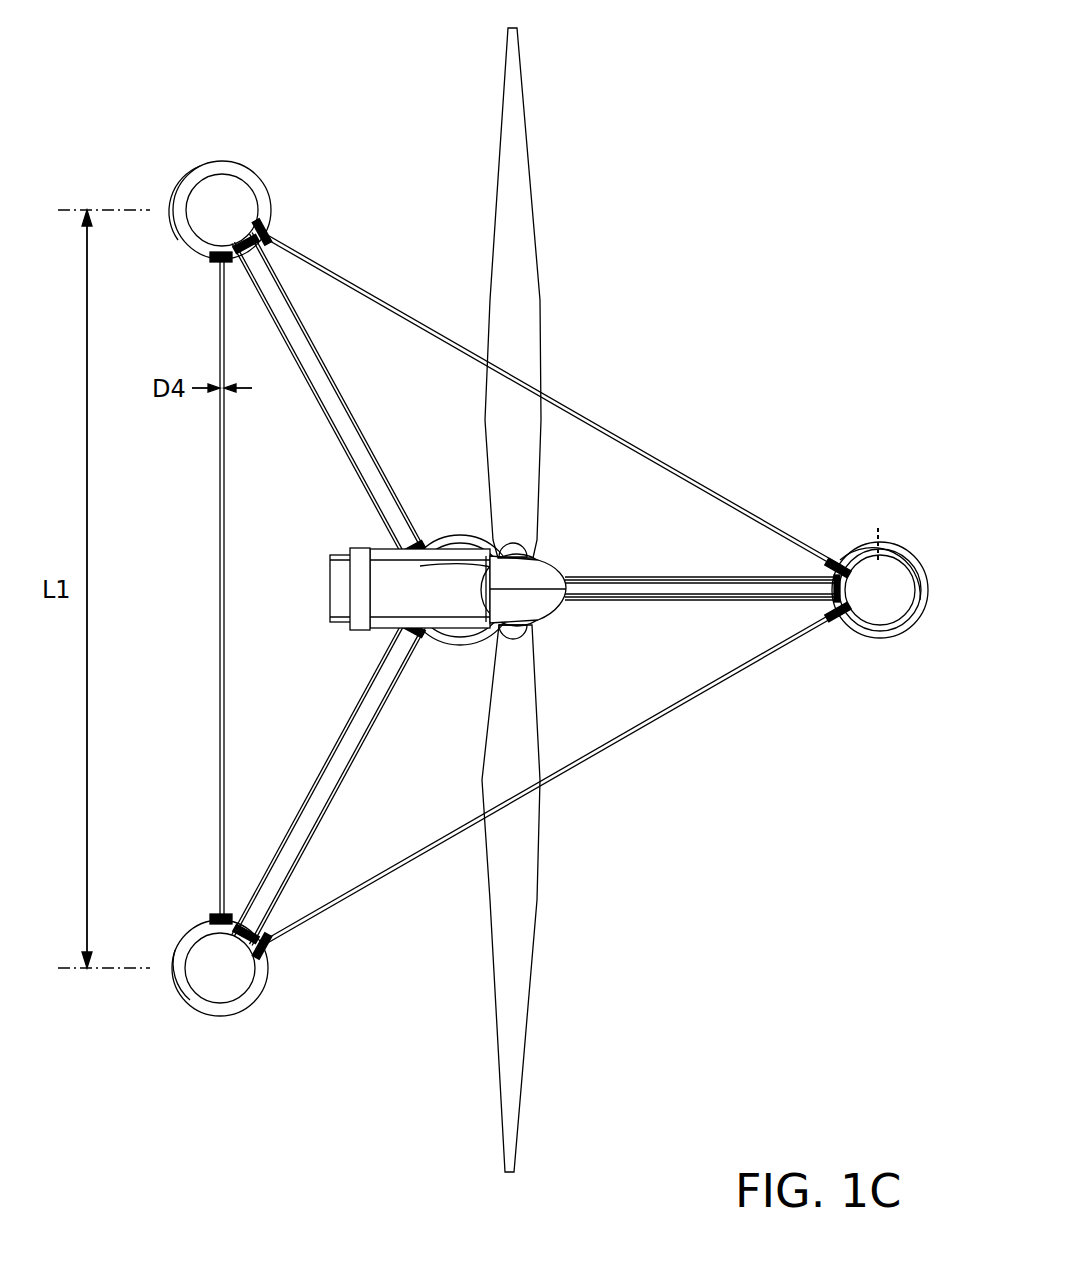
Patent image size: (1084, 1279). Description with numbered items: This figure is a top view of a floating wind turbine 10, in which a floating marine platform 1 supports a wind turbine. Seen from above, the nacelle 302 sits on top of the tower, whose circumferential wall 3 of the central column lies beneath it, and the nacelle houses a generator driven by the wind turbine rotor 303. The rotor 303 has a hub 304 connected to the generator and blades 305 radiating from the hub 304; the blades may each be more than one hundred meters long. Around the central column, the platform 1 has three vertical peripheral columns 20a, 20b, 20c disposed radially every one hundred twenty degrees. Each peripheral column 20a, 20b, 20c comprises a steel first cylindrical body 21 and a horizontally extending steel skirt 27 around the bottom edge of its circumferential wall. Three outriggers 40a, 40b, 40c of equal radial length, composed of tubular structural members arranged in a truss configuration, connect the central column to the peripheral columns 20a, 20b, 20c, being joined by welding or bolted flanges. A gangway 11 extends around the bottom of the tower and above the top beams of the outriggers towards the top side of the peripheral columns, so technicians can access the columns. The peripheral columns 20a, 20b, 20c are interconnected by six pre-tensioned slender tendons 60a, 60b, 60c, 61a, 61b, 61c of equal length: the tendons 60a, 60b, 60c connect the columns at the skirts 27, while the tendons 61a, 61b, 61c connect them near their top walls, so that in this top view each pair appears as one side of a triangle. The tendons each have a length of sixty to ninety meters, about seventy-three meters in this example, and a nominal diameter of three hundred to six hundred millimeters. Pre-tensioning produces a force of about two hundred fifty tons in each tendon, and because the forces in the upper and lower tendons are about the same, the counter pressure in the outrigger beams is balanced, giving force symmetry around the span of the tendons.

The floating wind turbine 10 is at (760, 95).
The floating marine platform 1 is at (850, 550).
The circumferential wall 3 is at (474, 617).
The gangway 11 is at (712, 598).
The peripheral column 20a is at (232, 196).
The peripheral column 20b is at (898, 572).
The peripheral column 20c is at (204, 984).
The first cylindrical body 21 is at (206, 176).
The skirt 27 is at (258, 190).
The outrigger 40a is at (342, 416).
The outrigger 40b is at (702, 660).
The outrigger 40c is at (328, 775).
The tendon 60a is at (551, 400).
The tendon 60b is at (626, 740).
The tendon 60c is at (160, 589).
The tendon 61a is at (682, 472).
The tendon 61b is at (551, 777).
The tendon 61c is at (220, 590).
The nacelle 302 is at (390, 598).
The wind turbine rotor 303 is at (554, 578).
The hub 304 is at (566, 592).
The blade 305 is at (528, 292).